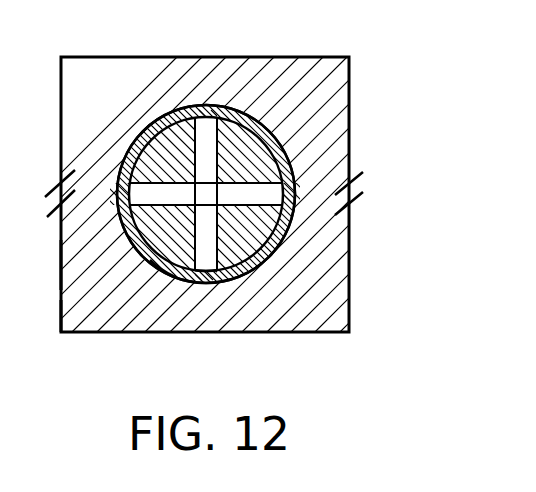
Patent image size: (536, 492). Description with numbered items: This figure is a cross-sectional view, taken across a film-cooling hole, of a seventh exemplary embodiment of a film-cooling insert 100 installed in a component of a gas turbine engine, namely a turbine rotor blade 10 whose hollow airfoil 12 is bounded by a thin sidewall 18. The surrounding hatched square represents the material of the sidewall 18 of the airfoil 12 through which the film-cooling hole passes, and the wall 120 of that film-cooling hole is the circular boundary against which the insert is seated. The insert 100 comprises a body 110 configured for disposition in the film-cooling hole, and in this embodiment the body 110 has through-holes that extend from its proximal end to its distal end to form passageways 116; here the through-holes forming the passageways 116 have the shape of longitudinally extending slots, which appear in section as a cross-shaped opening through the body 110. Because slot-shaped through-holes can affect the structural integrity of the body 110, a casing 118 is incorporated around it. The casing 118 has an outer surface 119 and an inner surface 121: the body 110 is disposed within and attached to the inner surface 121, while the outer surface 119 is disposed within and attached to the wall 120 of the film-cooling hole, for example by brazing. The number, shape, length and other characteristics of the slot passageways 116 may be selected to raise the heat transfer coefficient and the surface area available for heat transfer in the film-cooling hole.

The turbine rotor blade 10 is at (316, 100).
The airfoil 12 is at (61, 313).
The sidewall 18 is at (87, 260).
The film-cooling hole insert 100 is at (256, 109).
The insert body 110 is at (252, 274).
The passageway 116 is at (283, 187).
The casing 118 is at (276, 146).
The outer surface 119 is at (150, 122).
The wall 120 is at (222, 267).
The inner surface 121 is at (164, 244).